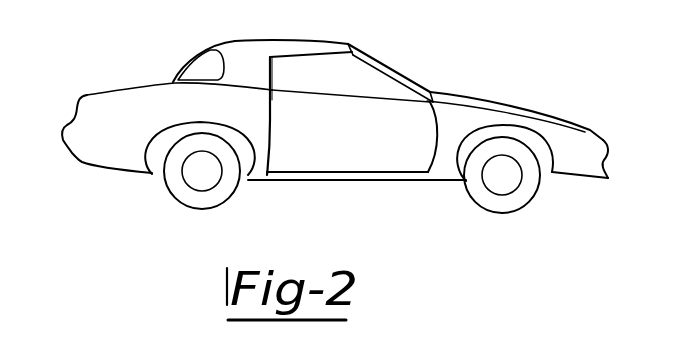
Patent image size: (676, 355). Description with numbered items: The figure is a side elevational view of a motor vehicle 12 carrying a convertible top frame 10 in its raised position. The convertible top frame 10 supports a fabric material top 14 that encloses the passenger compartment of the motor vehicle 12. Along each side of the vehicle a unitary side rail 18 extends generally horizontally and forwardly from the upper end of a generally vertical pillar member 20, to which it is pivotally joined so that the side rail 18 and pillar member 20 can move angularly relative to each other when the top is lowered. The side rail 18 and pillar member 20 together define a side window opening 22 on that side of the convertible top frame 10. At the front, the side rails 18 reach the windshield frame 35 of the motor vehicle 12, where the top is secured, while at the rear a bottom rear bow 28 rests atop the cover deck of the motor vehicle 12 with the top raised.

The convertible top frame 10 is at (349, 41).
The motor vehicle 12 is at (323, 193).
The fabric material top 14 is at (238, 49).
The side rails 18 is at (292, 59).
The pillar members 20 is at (262, 85).
The side window opening 22 is at (345, 99).
The bottom rear bow 28 is at (172, 79).
The windshield frame 35 is at (400, 77).